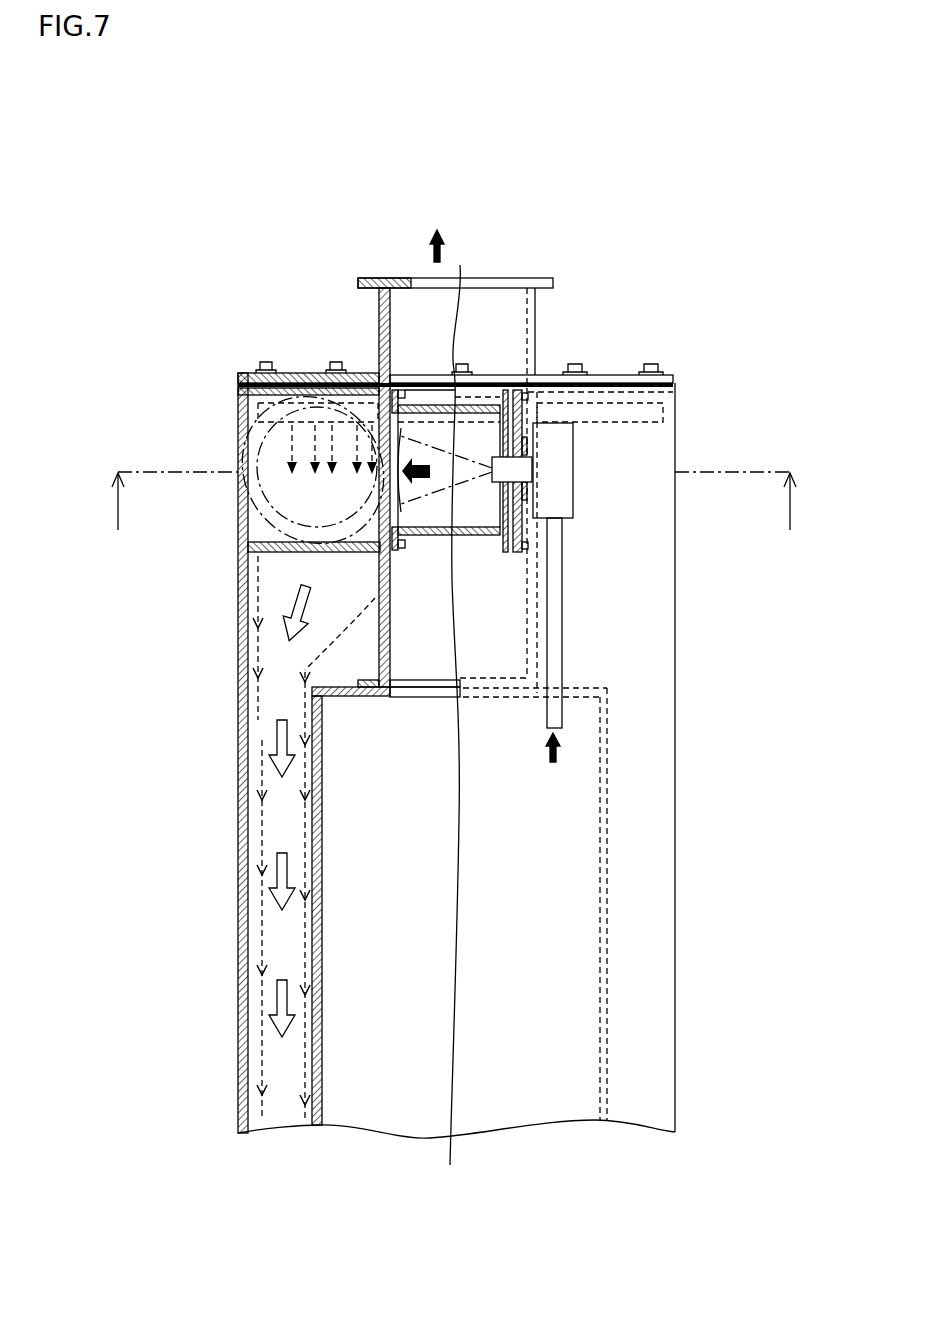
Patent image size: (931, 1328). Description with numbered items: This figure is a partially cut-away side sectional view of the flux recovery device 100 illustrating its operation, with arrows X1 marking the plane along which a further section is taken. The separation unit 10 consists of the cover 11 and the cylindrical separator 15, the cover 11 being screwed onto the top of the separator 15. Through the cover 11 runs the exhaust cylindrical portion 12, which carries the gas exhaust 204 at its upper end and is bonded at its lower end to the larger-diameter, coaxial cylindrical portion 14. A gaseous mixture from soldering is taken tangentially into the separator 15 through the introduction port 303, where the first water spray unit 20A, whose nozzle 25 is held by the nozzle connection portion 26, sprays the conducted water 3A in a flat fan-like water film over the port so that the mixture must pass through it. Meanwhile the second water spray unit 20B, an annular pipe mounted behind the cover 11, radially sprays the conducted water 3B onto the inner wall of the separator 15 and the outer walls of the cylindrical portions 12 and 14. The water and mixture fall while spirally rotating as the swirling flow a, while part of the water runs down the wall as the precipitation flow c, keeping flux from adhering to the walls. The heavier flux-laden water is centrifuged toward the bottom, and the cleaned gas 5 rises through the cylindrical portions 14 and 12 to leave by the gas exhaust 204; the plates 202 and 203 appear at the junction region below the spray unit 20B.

The flux recovery device 100 is at (186, 258).
The separation unit 10 is at (137, 648).
The cover 11 is at (612, 374).
The exhaust cylindrical portion 12 is at (380, 565).
The cylindrical portion 14 is at (312, 919).
The separator 15 is at (676, 858).
The conducted water 3A is at (311, 368).
The conducted water 3B is at (560, 751).
The gas 5 is at (448, 245).
The gas exhaust 204 is at (433, 296).
The plate 203 is at (412, 679).
The plate 202 is at (438, 700).
The introduction port 303 is at (262, 455).
The first water spray unit 20A is at (578, 447).
The second water spray unit 20B is at (672, 370).
The nozzle 25 is at (493, 485).
The nozzle connection portion 26 is at (576, 502).
The swirling flow a is at (277, 756).
The precipitation flow c is at (262, 824).
The section line X1 is at (456, 512).